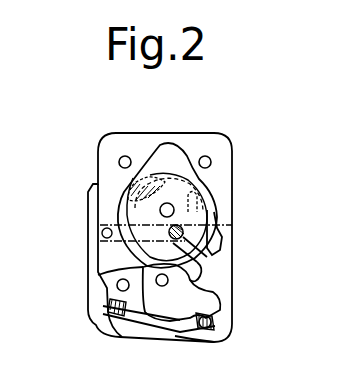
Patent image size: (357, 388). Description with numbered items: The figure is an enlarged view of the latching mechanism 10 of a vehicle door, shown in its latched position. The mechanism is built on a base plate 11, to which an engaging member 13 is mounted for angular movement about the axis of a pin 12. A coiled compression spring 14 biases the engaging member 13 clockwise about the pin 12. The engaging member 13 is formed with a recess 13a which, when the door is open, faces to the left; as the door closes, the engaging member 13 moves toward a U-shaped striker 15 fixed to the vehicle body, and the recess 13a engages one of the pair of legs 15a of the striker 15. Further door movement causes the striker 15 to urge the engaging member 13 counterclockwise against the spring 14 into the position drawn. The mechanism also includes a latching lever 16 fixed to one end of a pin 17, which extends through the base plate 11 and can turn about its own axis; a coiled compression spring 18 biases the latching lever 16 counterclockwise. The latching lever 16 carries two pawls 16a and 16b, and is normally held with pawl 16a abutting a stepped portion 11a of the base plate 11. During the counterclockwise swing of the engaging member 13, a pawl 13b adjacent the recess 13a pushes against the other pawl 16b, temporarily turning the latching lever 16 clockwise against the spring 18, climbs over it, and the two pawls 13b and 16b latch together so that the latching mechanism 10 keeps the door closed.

The latching mechanism 10 is at (240, 191).
The base plate 11 is at (232, 316).
The stepped portion 11a is at (190, 326).
The pin 12 is at (170, 206).
The engaging member 13 is at (224, 212).
The recess 13a is at (195, 271).
The pawl 13b is at (214, 242).
The coiled compression spring 14 is at (142, 173).
The U-shaped striker 15 is at (107, 238).
The legs 15a is at (185, 233).
The latching lever 16 is at (220, 289).
The pawl 16a is at (178, 335).
The pawl 16b is at (200, 262).
The pin 17 is at (100, 276).
The coiled compression spring 18 is at (127, 320).